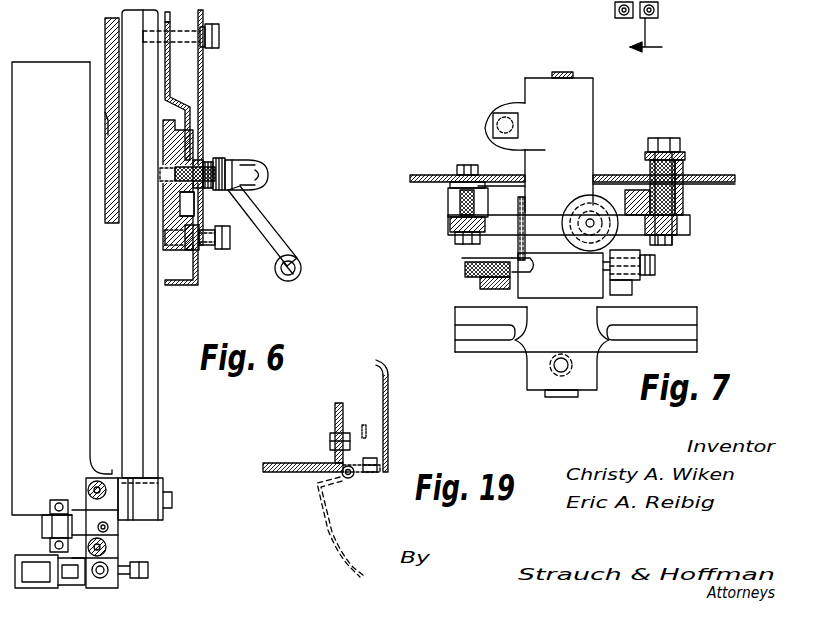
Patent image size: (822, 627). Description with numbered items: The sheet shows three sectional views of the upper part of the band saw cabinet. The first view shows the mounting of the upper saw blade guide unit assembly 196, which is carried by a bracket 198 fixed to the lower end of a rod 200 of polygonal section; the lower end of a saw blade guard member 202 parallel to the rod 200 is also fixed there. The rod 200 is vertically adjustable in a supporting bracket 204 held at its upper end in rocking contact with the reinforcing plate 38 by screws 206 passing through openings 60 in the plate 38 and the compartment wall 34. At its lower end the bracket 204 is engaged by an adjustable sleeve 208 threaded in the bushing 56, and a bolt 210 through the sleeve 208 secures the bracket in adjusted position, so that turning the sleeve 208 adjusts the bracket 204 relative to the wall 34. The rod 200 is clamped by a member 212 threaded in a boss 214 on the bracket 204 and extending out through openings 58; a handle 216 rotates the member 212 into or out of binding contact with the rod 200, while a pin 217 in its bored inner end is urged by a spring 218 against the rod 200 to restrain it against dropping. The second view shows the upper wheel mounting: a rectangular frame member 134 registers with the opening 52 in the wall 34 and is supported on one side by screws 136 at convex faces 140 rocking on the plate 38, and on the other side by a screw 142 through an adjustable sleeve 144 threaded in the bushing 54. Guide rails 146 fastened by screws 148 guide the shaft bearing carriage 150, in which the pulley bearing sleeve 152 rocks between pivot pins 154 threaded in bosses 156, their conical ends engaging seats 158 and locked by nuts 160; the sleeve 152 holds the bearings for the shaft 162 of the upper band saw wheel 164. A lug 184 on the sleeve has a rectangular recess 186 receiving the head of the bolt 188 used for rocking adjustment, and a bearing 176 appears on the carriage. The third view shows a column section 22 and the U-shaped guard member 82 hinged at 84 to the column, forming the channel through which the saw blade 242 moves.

In FIG. 6, the saw blade guard member 202 is at (60, 75).
In FIG. 6, the supporting bracket 204 is at (108, 140).
In FIG. 6, the rod 200 is at (145, 437).
In FIG. 6, the reinforcing plate 38 is at (172, 67).
In FIG. 7, the reinforcing plate 38 is at (725, 184).
In FIG. 6, the compartment wall 34 is at (201, 120).
In FIG. 7, the compartment wall 34 is at (415, 177).
In FIG. 6, the bushing 56 is at (190, 258).
In FIG. 6, the openings 60 is at (168, 28).
In FIG. 6, the screws 206 is at (192, 40).
In FIG. 6, the boss 214 is at (167, 217).
In FIG. 6, the pin 217 is at (160, 173).
In FIG. 6, the openings 58 is at (200, 165).
In FIG. 6, the spring 218 is at (208, 162).
In FIG. 6, the member 212 is at (220, 160).
In FIG. 6, the handle 216 is at (263, 222).
In FIG. 6, the adjustable sleeve 208 is at (190, 230).
In FIG. 6, the bolt 210 is at (210, 242).
In FIG. 6, the bracket 198 is at (160, 490).
In FIG. 6, the upper saw blade guide unit assembly 196 is at (128, 548).
In FIG. 7, the upper saw blade guide unit assembly 196 is at (660, 10).
In FIG. 7, the pulley bearing sleeve 152 is at (580, 113).
In FIG. 7, the lug 184 is at (512, 105).
In FIG. 7, the rectangular recess 186 is at (520, 122).
In FIG. 7, the bolt 188 is at (512, 130).
In FIG. 7, the bushing 54 is at (680, 175).
In FIG. 7, the rectangular openings 52 is at (500, 175).
In FIG. 7, the screws 136 is at (468, 165).
In FIG. 7, the convex faces 140 is at (462, 186).
In FIG. 7, the frame member 134 is at (455, 200).
In FIG. 7, the screw 142 is at (665, 140).
In FIG. 7, the adjustable sleeve 144 is at (652, 160).
In FIG. 7, the shaft bearing carriage 150 is at (540, 222).
In FIG. 7, the bearing 176 is at (582, 205).
In FIG. 7, the guide rails 146 is at (452, 225).
In FIG. 7, the screws 148 is at (460, 240).
In FIG. 7, the nuts 160 is at (470, 262).
In FIG. 7, the pivot pins 154 is at (478, 268).
In FIG. 7, the bosses 156 is at (495, 283).
In FIG. 7, the seats 158 is at (528, 265).
In FIG. 7, the upper band saw wheel 164 is at (512, 345).
In FIG. 7, the shaft 162 is at (560, 398).
In FIG. 19, the sheet metal sections 22 is at (298, 475).
In FIG. 19, the guard member 82 is at (390, 407).
In FIG. 19, the saw blade 242 is at (370, 428).
In FIG. 19, the hinge 84 is at (352, 478).